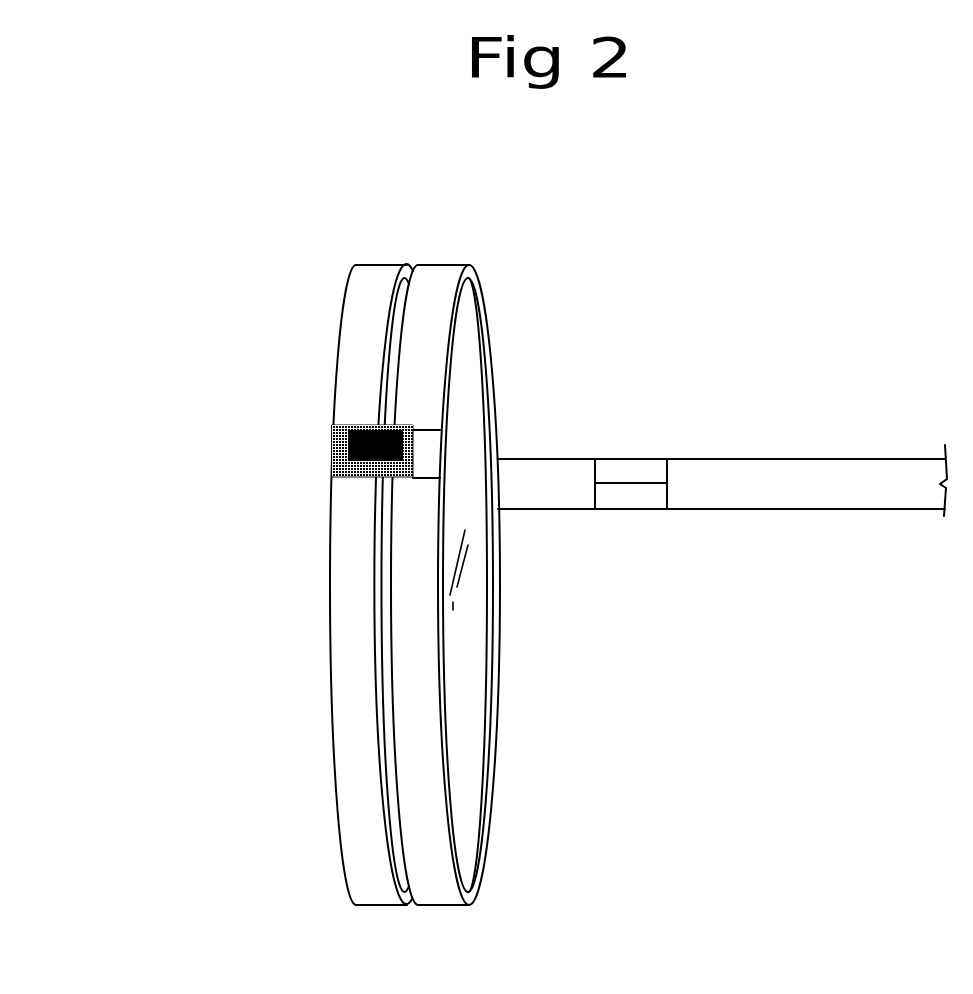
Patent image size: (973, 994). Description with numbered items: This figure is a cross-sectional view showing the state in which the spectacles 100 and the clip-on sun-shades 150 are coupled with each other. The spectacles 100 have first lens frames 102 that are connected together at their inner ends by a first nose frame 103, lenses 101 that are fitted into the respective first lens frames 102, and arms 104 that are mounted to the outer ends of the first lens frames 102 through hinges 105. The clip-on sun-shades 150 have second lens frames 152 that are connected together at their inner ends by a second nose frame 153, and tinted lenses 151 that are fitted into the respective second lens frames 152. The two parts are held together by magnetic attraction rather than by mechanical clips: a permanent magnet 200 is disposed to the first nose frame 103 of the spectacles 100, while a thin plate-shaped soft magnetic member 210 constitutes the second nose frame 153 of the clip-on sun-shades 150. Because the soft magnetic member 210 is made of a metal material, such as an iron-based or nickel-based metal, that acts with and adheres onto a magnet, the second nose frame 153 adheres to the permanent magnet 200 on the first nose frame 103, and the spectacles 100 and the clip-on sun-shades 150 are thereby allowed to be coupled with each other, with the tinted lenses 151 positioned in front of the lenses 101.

The spectacles 100 is at (668, 633).
The lens 101 is at (475, 733).
The first lens frame 102 is at (490, 779).
The first nose frame 103 is at (426, 449).
The arm 104 is at (829, 497).
The hinge 105 is at (660, 517).
The clip-on sun-shades 150 is at (310, 783).
The tinted lens 151 is at (400, 857).
The second lens frame 152 is at (343, 820).
The second nose frame 153 is at (322, 449).
The permanent magnet 200 is at (362, 476).
The soft magnetic member 210 is at (365, 424).